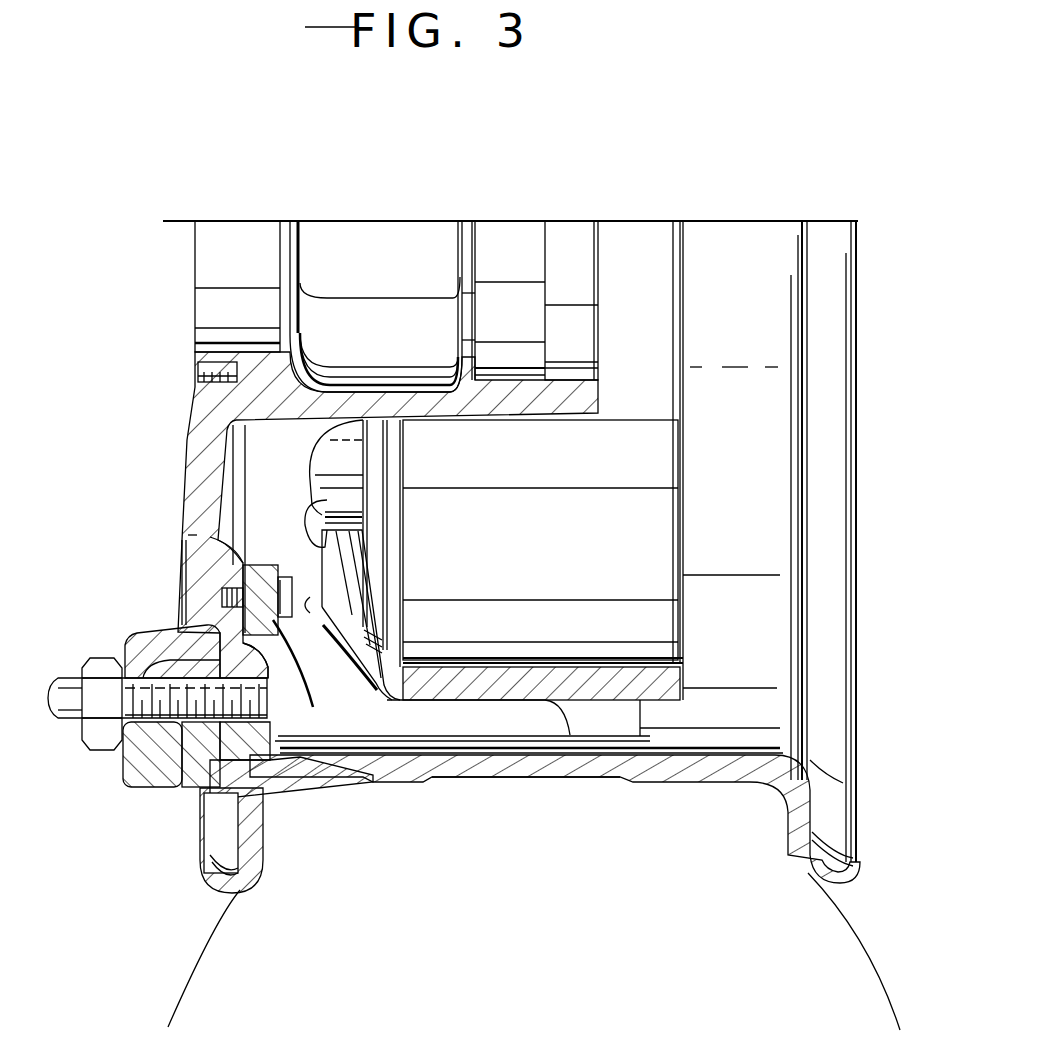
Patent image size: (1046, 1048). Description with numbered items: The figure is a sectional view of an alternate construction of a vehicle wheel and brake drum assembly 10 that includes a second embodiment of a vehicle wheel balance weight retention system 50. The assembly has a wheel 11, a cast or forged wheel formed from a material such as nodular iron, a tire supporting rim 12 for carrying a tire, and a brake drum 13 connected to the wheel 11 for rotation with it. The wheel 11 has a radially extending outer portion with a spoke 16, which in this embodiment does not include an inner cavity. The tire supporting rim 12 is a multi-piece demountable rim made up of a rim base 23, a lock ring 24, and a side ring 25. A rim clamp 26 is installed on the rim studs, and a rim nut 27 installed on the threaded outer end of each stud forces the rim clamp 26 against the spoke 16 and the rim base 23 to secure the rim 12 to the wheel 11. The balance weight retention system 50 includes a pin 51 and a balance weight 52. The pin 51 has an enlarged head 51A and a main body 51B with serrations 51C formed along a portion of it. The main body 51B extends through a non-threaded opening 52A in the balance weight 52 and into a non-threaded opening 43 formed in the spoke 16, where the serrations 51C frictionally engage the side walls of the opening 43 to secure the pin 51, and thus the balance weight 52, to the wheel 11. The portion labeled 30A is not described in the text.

The vehicle wheel and brake drum assembly 10 is at (178, 250).
The wheel 11 is at (182, 437).
The tire supporting rim 12 is at (686, 745).
The brake drum 13 is at (508, 652).
The spoke 16 is at (188, 535).
The rim base 23 is at (597, 780).
The lock ring 24 is at (284, 793).
The side ring 25 is at (256, 868).
The rim clamp 26 is at (145, 790).
The rim nut 27 is at (98, 742).
The hook portion 30A is at (322, 520).
The non-threaded opening 43 is at (200, 590).
The vehicle wheel balance weight retention system 50 is at (172, 548).
The pin 51 is at (291, 577).
The enlarged head 51A is at (293, 597).
The main body 51B is at (285, 640).
The serrations 51C is at (224, 597).
The balance weight 52 is at (303, 630).
The non-threaded opening 52A is at (252, 593).